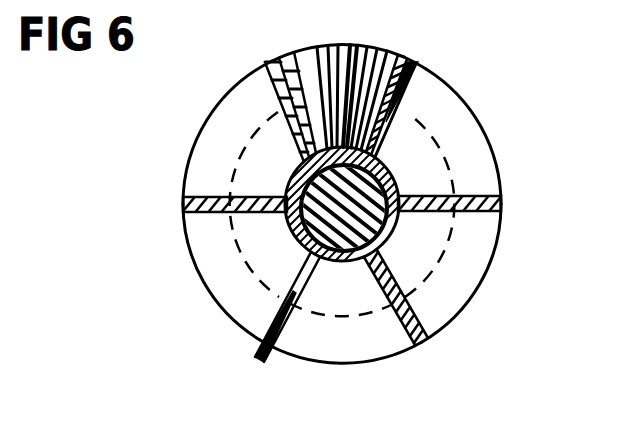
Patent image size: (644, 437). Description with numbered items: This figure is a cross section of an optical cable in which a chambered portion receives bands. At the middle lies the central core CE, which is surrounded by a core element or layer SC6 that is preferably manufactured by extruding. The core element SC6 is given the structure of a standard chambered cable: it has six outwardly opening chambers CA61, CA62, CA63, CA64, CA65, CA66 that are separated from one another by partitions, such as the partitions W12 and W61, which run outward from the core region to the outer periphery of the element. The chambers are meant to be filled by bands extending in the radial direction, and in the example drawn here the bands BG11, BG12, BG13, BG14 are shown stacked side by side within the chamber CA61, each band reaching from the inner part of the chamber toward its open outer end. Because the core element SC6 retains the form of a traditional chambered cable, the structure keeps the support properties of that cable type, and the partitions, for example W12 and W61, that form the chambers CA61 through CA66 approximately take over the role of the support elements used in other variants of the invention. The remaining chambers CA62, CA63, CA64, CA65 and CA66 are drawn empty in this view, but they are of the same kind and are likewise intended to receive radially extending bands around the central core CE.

The outwardly opening chamber CA61 is at (284, 58).
The outwardly opening chamber CA62 is at (476, 172).
The outwardly opening chamber CA63 is at (470, 260).
The outwardly opening chamber CA64 is at (373, 341).
The outwardly opening chamber CA65 is at (212, 266).
The outwardly opening chamber CA66 is at (203, 171).
The band BG11 is at (282, 93).
The band BG12 is at (300, 113).
The band BG13 is at (356, 55).
The band BG14 is at (388, 104).
The partition W61 is at (299, 153).
The partition W12 is at (394, 112).
The central core CE is at (300, 240).
The core element SC6 is at (252, 360).